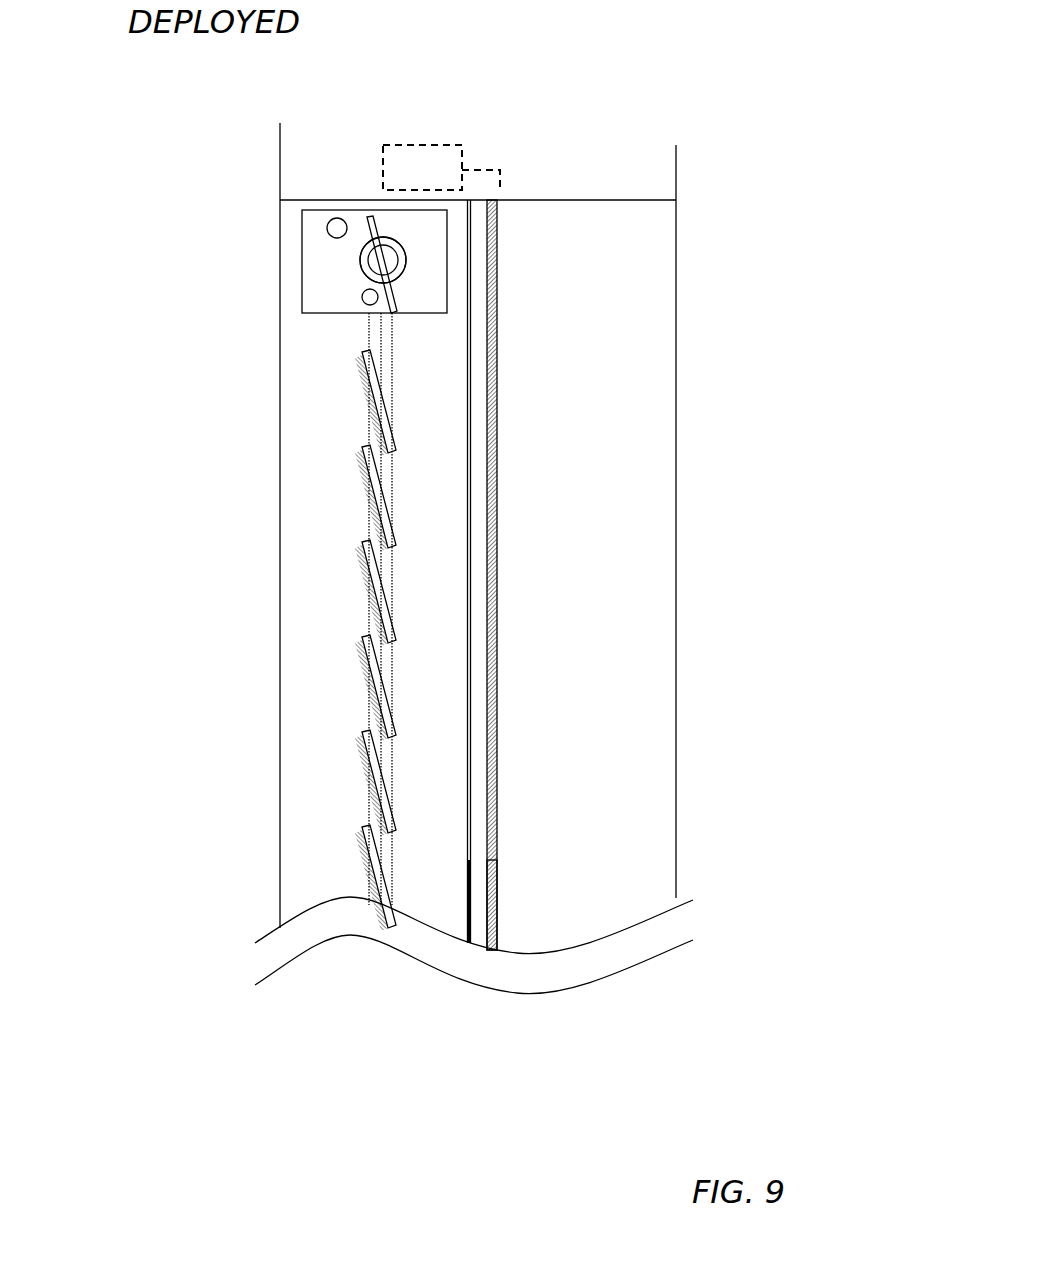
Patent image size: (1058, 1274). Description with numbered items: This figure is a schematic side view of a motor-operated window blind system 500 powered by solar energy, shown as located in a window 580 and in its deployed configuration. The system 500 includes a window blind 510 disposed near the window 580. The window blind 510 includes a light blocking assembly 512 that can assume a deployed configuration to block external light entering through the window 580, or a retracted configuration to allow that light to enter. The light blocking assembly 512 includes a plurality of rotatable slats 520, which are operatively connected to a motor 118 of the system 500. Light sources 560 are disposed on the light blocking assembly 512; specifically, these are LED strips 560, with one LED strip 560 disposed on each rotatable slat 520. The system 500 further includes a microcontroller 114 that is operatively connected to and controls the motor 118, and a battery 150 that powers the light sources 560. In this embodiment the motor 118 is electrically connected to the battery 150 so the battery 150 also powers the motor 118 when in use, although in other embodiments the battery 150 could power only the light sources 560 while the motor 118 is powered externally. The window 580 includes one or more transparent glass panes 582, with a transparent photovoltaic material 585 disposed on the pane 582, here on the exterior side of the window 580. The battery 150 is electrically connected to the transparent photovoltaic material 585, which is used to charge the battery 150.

The motor-operated window blind system 500 is at (783, 192).
The window blind 510 is at (258, 237).
The light blocking assembly 512 is at (422, 385).
The rotatable slats 520 is at (422, 697).
The microcontroller 114 is at (353, 218).
The motor 118 is at (383, 260).
The battery 150 is at (441, 167).
The light sources 560 is at (359, 495).
The transparent photovoltaic material 585 is at (497, 742).
The transparent glass pane 582 is at (477, 867).
The window 580 is at (513, 888).